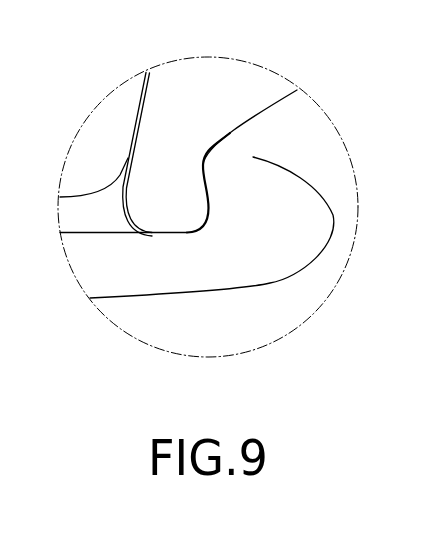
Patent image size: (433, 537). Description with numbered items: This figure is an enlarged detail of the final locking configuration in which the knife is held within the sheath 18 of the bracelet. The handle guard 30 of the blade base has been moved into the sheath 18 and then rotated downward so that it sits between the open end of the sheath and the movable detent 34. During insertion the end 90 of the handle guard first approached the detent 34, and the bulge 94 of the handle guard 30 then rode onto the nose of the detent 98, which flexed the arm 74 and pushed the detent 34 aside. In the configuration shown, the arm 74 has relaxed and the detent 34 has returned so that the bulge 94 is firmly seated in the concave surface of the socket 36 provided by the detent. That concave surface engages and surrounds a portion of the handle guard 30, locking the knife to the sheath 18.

The handle guard 30 is at (206, 78).
The sheath 18 is at (95, 142).
The arm 74 is at (87, 267).
The end of the handle guard 90 is at (150, 232).
The bulge 94 is at (203, 207).
The nose of the detent 98 is at (205, 163).
The socket 36 is at (205, 167).
The detent 34 is at (293, 220).